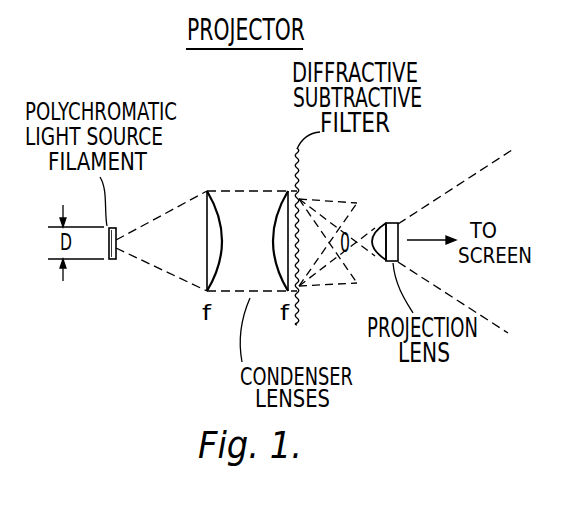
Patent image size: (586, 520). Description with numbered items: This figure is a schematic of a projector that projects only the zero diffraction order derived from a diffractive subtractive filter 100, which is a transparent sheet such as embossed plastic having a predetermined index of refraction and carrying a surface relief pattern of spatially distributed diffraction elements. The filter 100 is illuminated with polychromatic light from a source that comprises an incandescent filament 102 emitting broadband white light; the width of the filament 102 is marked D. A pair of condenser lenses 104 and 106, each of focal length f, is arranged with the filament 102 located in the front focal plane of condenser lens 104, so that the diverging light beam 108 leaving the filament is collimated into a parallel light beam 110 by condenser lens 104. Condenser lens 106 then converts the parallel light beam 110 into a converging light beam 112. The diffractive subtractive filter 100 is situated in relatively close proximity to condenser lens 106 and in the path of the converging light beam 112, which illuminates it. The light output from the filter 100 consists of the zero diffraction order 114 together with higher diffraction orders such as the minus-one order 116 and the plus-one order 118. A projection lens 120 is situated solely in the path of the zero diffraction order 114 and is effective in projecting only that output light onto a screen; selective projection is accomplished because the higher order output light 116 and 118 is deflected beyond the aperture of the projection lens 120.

The diffractive subtractive filter 100 is at (278, 216).
The incandescent filament 102 is at (88, 262).
The condenser lens 104 is at (228, 190).
The condenser lens 106 is at (277, 193).
The diverging light beam 108 is at (175, 272).
The parallel light beam 110 is at (225, 294).
The converging light beam 112 is at (300, 324).
The zero diffraction order 114 is at (373, 223).
The −1 order 116 is at (322, 198).
The +1 order 118 is at (313, 286).
The projection lens 120 is at (397, 223).